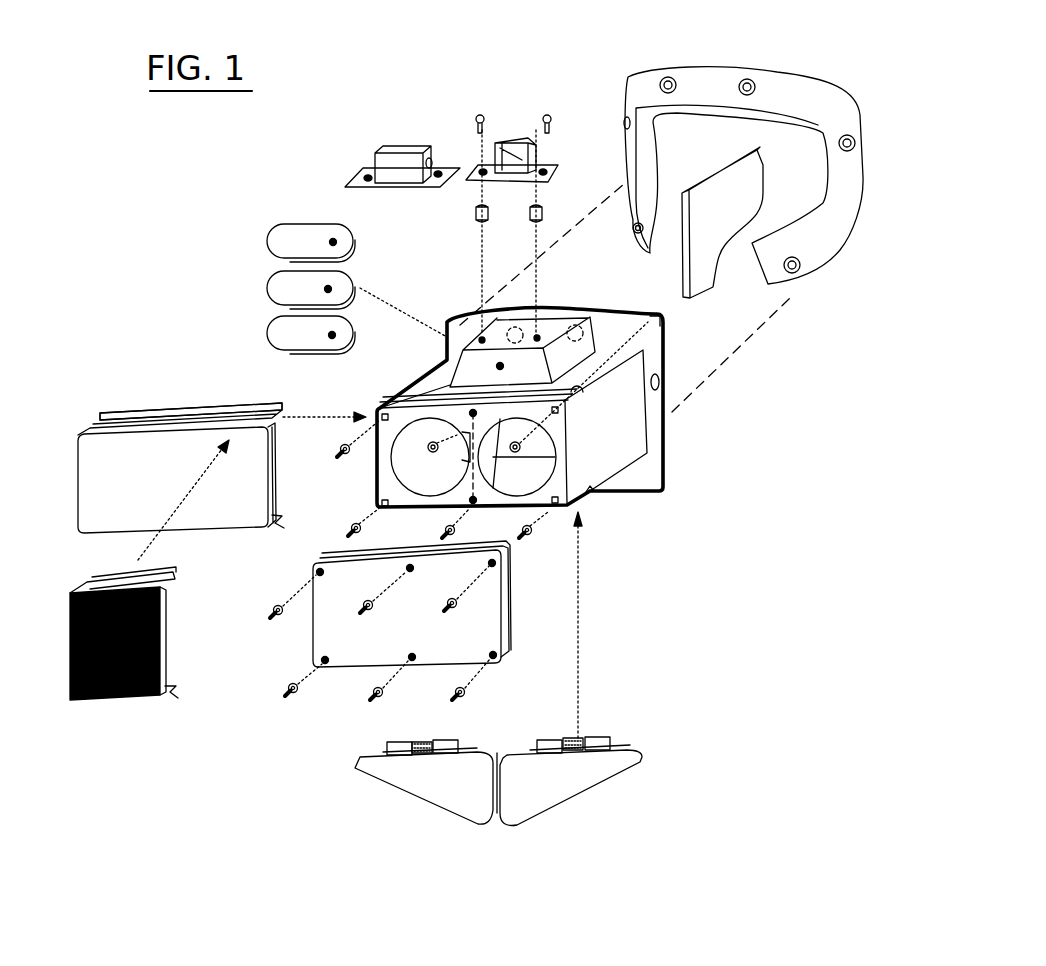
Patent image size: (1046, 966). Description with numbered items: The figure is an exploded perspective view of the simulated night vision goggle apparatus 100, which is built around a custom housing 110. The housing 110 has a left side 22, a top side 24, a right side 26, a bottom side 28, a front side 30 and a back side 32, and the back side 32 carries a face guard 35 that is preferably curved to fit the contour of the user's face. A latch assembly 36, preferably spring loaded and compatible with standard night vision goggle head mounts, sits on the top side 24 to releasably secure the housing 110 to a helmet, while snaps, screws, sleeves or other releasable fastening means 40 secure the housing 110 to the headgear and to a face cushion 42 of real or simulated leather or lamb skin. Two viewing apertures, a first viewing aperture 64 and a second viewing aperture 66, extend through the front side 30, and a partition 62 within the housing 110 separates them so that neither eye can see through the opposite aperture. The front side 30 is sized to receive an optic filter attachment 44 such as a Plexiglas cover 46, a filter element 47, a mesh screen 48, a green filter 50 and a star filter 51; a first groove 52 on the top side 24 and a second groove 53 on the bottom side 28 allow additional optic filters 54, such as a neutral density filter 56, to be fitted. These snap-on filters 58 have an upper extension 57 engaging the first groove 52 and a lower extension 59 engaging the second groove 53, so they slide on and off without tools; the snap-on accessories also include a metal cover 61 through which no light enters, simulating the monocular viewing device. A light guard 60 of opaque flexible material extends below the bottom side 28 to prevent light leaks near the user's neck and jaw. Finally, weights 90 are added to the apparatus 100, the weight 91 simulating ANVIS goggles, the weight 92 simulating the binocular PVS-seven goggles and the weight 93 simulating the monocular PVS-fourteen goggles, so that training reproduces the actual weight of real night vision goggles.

The left side 22 is at (403, 385).
The top side 24 is at (429, 386).
The right side 26 is at (610, 449).
The bottom side 28 is at (551, 511).
The front side 30 is at (379, 476).
The back side 32 is at (632, 313).
The face guard 35 is at (720, 56).
The latch assembly 36 is at (408, 151).
The releasable fastening means 40 is at (669, 76).
The face cushion 42 is at (788, 74).
The optic filter attachment 44 is at (390, 653).
The Plexiglas cover 46 is at (390, 653).
The rear cover plate 47 is at (390, 653).
The mesh screen 48 is at (348, 672).
The green filter 50 is at (195, 511).
The star filter 51 is at (294, 584).
The first groove 52 is at (588, 388).
The second groove 53 is at (591, 494).
The additional optic filters 54 is at (195, 511).
The neutral density filter 56 is at (233, 521).
The upper extension 57 is at (140, 415).
The snap-on filters 58 is at (273, 472).
The lower extension 59 is at (280, 518).
The light guard 60 is at (447, 791).
The metal cover 61 is at (167, 633).
The partition 62 is at (728, 173).
The first viewing aperture 64 is at (431, 492).
The second viewing aperture 66 is at (515, 492).
The weights 90 is at (214, 235).
The weight 91 is at (268, 243).
The weight 92 is at (268, 290).
The weight 93 is at (268, 333).
The simulated night vision goggle apparatus 100 is at (636, 553).
The housing 110 is at (650, 440).